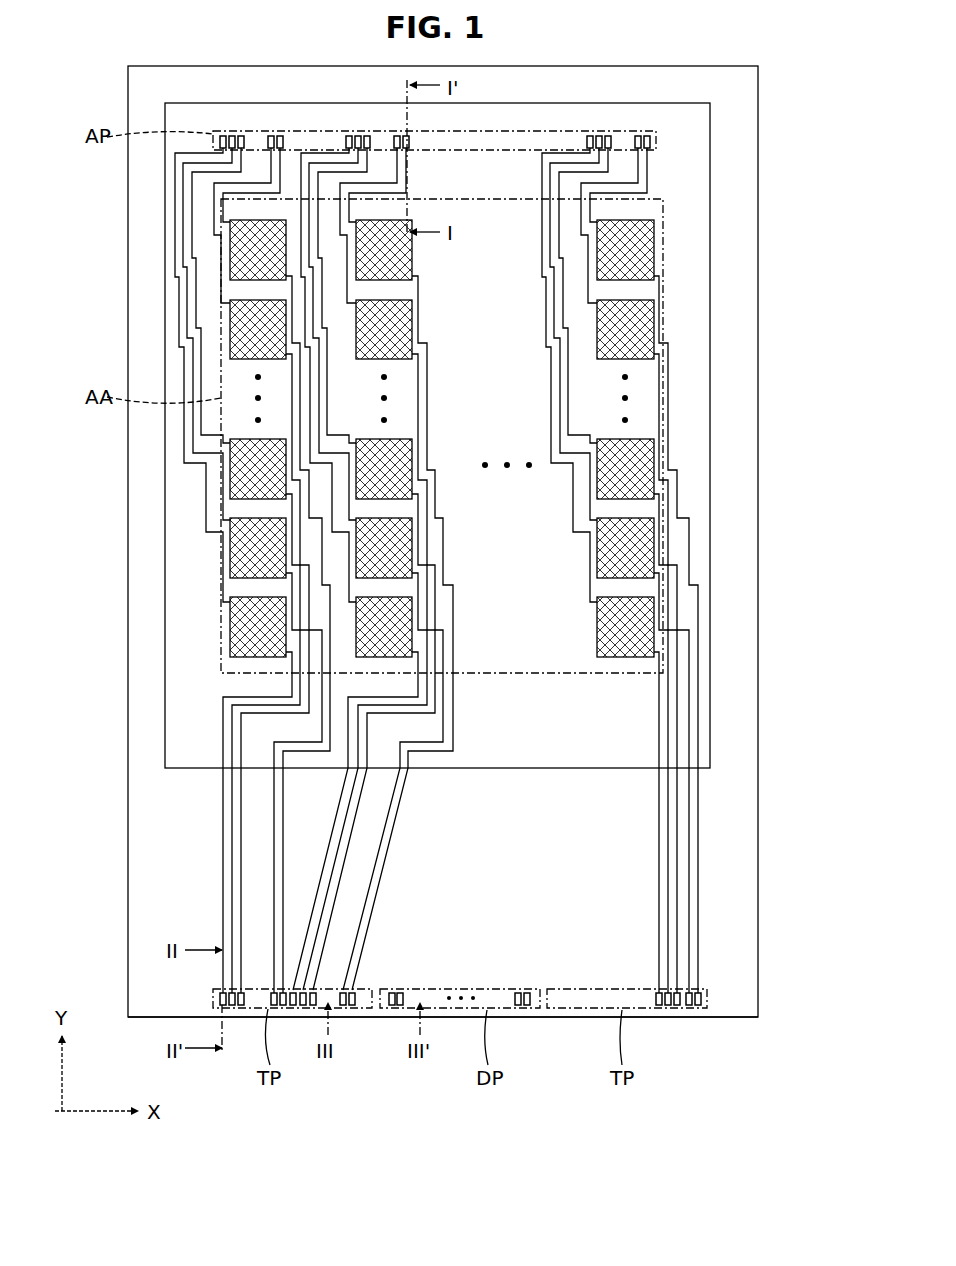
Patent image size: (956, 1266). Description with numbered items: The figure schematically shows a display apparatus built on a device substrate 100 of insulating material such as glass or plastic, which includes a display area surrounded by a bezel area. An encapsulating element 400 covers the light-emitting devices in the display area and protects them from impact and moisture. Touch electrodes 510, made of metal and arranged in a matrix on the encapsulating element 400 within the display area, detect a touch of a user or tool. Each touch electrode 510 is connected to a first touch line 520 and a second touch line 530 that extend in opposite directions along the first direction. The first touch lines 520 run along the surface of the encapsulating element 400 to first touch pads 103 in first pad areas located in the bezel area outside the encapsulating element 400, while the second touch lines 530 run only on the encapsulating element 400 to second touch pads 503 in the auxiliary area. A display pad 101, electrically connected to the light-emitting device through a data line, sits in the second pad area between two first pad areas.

The device substrate 100 is at (758, 608).
The display pad 101 is at (395, 1013).
The first touch pad 103 is at (706, 998).
The encapsulating element 400 is at (163, 508).
The second touch pad 503 is at (656, 140).
The touch electrode 510 is at (663, 318).
The first touch line 520 is at (692, 478).
The second touch line 530 is at (175, 313).